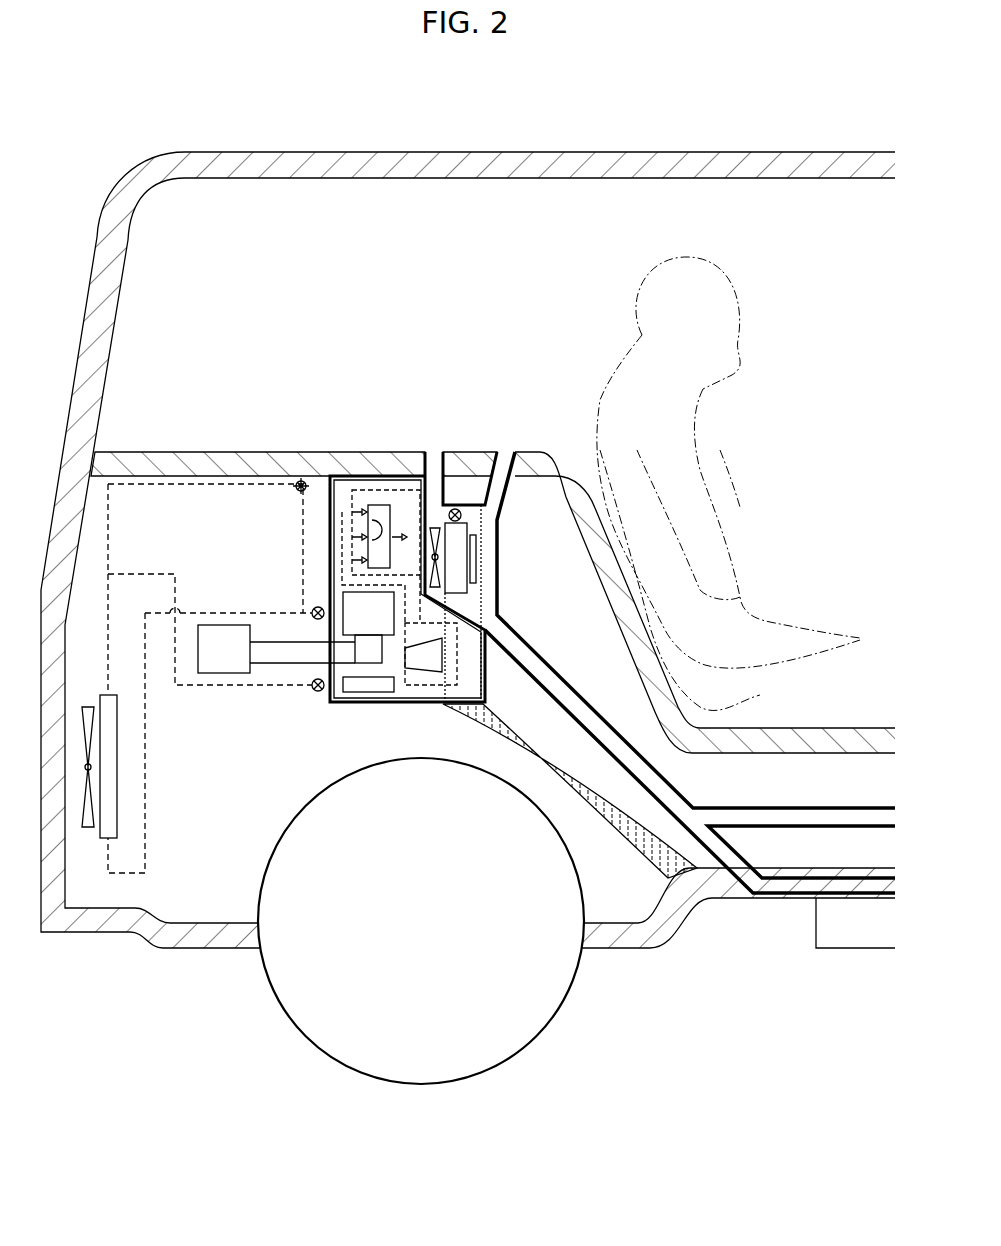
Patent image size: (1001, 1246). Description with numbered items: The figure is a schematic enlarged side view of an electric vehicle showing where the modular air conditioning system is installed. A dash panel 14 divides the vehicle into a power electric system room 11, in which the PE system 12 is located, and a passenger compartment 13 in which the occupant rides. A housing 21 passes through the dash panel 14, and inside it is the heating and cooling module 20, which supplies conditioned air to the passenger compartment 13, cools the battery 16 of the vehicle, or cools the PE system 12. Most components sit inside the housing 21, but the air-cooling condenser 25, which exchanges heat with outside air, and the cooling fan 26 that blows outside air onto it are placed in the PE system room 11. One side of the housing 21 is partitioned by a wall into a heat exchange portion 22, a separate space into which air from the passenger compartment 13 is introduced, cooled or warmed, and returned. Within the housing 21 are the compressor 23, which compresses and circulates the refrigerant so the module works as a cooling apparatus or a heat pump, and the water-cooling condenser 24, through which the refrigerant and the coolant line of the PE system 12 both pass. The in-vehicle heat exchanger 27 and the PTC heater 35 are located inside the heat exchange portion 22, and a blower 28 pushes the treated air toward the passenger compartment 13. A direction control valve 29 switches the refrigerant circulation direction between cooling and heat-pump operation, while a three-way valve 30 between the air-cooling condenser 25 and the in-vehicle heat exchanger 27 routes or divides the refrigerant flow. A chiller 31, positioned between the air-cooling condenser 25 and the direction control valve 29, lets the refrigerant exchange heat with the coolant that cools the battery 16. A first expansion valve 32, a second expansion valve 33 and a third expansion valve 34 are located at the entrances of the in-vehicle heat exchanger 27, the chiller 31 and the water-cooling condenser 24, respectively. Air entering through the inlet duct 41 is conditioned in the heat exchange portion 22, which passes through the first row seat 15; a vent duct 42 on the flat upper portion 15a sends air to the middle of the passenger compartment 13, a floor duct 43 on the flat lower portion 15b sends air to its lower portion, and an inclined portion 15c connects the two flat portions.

The power electric (PE) system room 11 is at (212, 508).
The PE system 12 is at (212, 668).
The passenger compartment 13 is at (453, 237).
The dash panel 14 is at (625, 850).
The first row seat 15 is at (620, 567).
The flat upper portion 15a is at (243, 456).
The flat lower portion 15b is at (763, 745).
The inclined portion 15c is at (594, 515).
The battery 16 is at (848, 942).
The heating and cooling module 20 is at (397, 462).
The housing 21 is at (352, 515).
The heat exchange portion 22 is at (499, 603).
The compressor 23 is at (422, 667).
The water-cooling condenser 24 is at (343, 595).
The air-cooling condenser 25 is at (113, 800).
The cooling fan 26 is at (88, 705).
The in-vehicle heat exchanger 27 is at (465, 528).
The blower 28 is at (487, 647).
The direction control valve 29 is at (370, 502).
The three-way valve 30 is at (301, 480).
The chiller 31 is at (367, 692).
The first expansion valve 32 is at (470, 497).
The second expansion valve 33 is at (313, 690).
The third expansion valve 34 is at (311, 612).
The PTC heater 35 is at (478, 555).
The inlet duct 41 is at (433, 525).
The vent duct 42 is at (461, 512).
The floor duct 43 is at (820, 806).